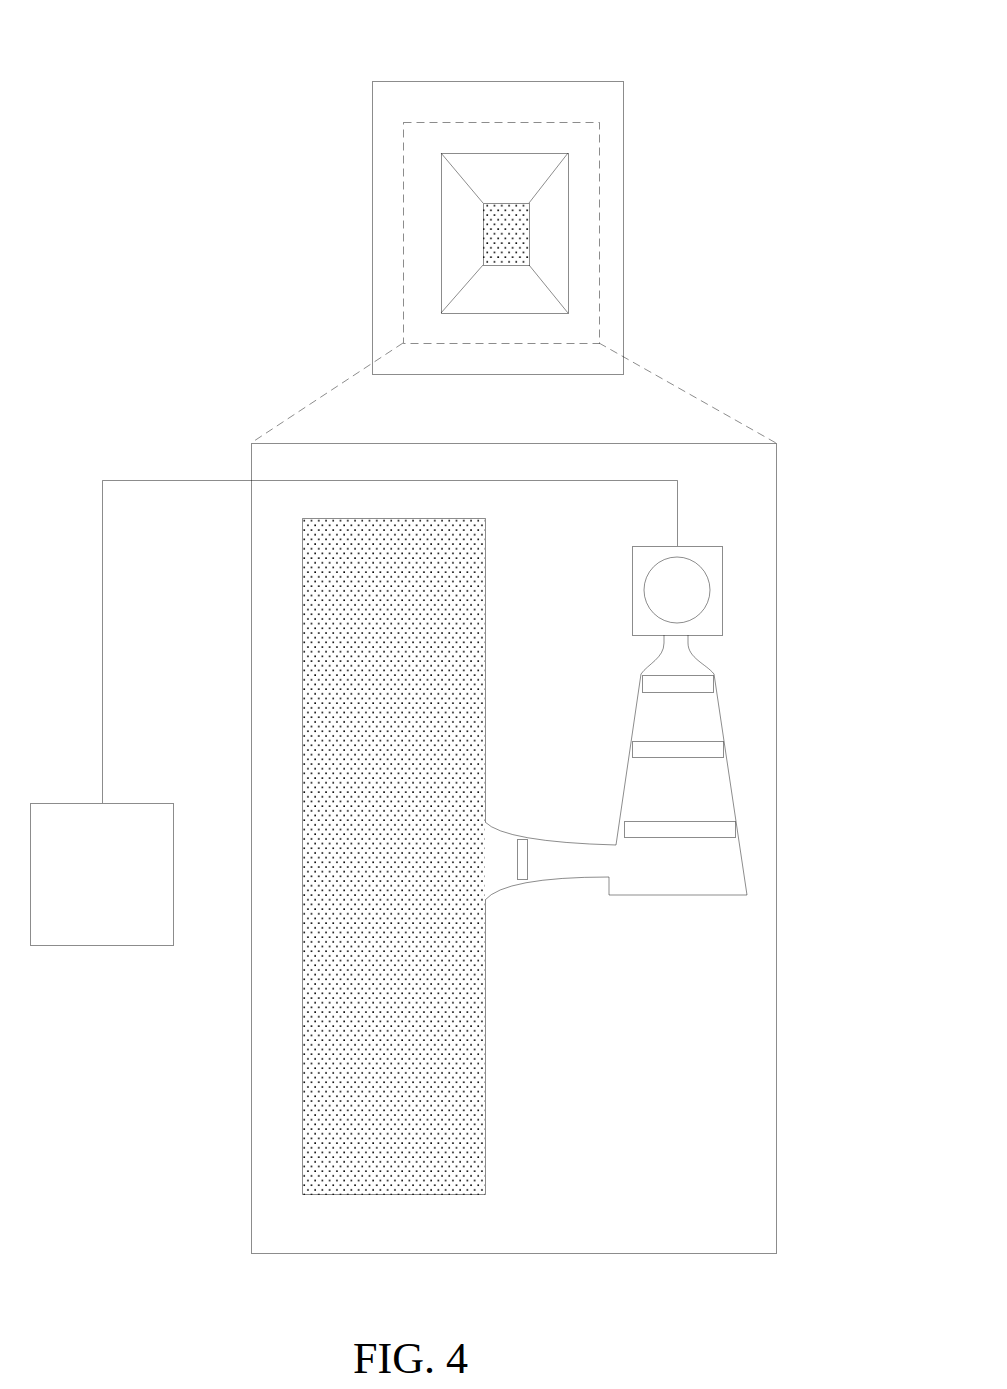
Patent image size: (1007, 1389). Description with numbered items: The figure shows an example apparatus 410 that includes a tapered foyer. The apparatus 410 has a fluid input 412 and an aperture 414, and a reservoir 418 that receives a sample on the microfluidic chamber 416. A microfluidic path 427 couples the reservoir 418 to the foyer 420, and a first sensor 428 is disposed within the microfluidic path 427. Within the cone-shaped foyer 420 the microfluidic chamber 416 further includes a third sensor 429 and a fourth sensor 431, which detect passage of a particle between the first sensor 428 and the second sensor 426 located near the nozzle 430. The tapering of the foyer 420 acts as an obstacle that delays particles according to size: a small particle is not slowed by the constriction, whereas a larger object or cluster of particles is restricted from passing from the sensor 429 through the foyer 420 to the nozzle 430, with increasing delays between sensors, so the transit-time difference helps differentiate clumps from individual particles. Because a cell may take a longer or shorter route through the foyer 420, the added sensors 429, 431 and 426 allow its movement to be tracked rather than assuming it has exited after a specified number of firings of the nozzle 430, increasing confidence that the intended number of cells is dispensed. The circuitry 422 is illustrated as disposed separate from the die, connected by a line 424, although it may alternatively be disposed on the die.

The apparatus 410 is at (276, 26).
The fluid input 412 is at (623, 120).
The aperture 414 is at (529, 232).
The microfluidic chamber 416 is at (599, 205).
The reservoir 418 is at (302, 591).
The foyer 420 is at (628, 788).
The circuitry 422 is at (102, 945).
The wire 424 is at (102, 722).
The second sensor 426 is at (642, 683).
The microfluidic path 427 is at (574, 890).
The first sensor 428 is at (522, 895).
The third sensor 429 is at (624, 832).
The nozzle 430 is at (632, 557).
The fourth sensor 431 is at (632, 750).